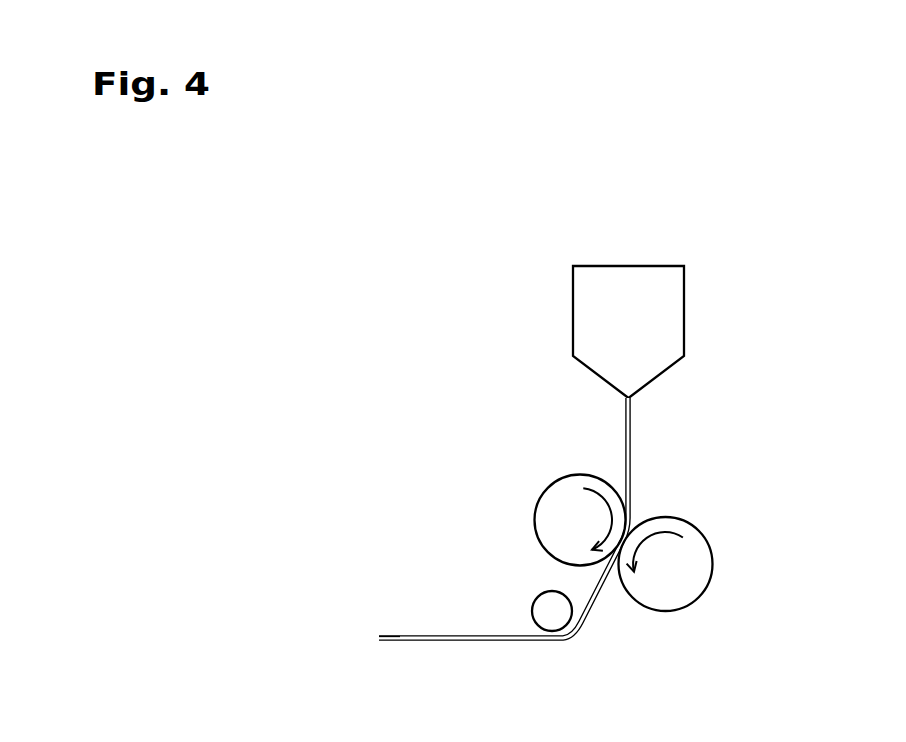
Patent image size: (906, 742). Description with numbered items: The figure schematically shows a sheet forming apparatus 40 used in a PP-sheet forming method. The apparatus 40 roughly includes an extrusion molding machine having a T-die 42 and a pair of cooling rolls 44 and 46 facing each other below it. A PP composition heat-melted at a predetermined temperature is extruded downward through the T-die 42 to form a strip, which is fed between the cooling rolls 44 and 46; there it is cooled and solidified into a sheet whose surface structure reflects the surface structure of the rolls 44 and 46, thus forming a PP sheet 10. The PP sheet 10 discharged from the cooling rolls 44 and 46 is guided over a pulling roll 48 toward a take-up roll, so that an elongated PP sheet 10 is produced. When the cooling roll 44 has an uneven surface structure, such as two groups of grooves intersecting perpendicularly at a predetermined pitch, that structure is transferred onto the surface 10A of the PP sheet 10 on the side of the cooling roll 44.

The sheet forming apparatus 40 is at (777, 272).
The T-die 42 is at (583, 312).
The cooling roll 44 is at (548, 522).
The cooling roll 46 is at (693, 585).
The pulling roll 48 is at (538, 610).
The PP sheet 10 is at (437, 643).
The surface 10A is at (392, 635).